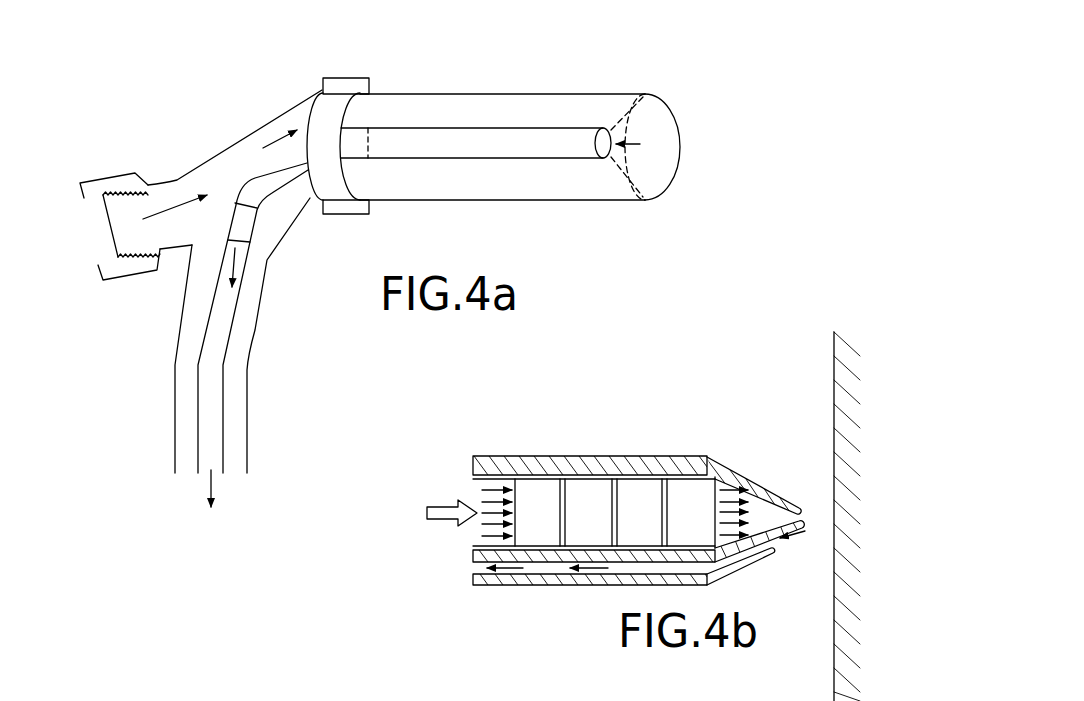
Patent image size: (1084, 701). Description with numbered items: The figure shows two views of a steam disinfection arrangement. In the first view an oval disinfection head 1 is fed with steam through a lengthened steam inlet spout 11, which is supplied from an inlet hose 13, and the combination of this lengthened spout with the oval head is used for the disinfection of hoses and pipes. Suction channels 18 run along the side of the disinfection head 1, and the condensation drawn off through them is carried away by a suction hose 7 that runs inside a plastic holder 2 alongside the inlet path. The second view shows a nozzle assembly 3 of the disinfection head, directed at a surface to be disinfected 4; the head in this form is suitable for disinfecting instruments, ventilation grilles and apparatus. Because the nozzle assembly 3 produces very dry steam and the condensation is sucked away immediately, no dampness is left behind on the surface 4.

In FIG. 4a, the disinfection head 1 is at (480, 93).
In FIG. 4a, the suction nozzle/channel 18 is at (570, 128).
In FIG. 4a, the inlet spout 11 is at (275, 120).
In FIG. 4a, the inlet hose 13 is at (120, 174).
In FIG. 4a, the plastic holder 2 is at (260, 305).
In FIG. 4a, the suction hose 7 is at (210, 370).
In FIG. 4b, the nozzle assembly 3 is at (538, 503).
In FIG. 4b, the surface to be disinfected 4 is at (832, 397).